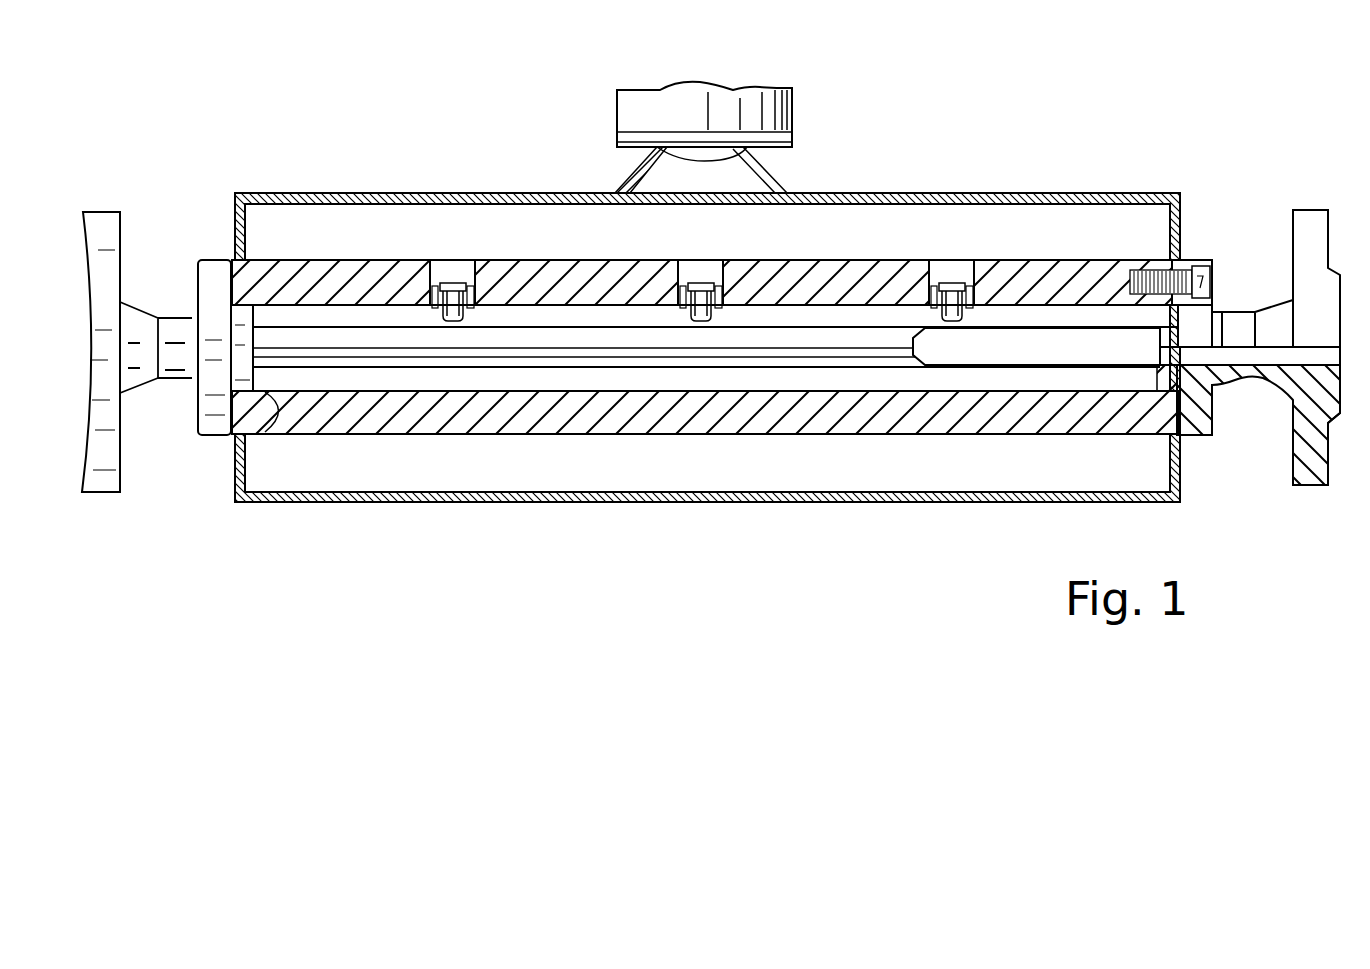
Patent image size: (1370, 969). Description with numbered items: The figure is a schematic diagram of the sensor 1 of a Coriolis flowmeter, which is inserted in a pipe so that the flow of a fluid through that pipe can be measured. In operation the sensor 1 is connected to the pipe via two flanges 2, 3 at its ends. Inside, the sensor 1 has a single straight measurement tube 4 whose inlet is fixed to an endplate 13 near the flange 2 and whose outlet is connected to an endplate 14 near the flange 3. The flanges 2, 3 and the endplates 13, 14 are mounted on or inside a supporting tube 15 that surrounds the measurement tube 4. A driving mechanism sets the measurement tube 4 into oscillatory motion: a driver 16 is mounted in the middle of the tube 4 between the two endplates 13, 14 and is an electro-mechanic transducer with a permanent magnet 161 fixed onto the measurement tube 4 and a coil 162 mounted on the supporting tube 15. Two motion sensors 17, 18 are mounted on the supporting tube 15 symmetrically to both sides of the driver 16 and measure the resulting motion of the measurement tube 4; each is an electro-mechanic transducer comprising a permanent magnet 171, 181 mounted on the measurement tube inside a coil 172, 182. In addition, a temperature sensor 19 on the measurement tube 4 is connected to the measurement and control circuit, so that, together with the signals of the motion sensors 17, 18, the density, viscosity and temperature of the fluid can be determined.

The sensor 1 is at (921, 126).
The flange 2 is at (100, 226).
The flange 3 is at (1303, 470).
The measurement tube 4 is at (383, 357).
The endplate 13 is at (234, 330).
The endplate 14 is at (1165, 332).
The supporting tube 15 is at (452, 427).
The driver 16 is at (706, 259).
The permanent magnet 161 is at (718, 313).
The coil 162 is at (693, 287).
The motion sensor 17 is at (457, 259).
The permanent magnet 171 is at (470, 313).
The coil 172 is at (446, 287).
The motion sensor 18 is at (955, 259).
The permanent magnet 181 is at (970, 313).
The coil 182 is at (945, 287).
The temperature sensor 19 is at (265, 436).